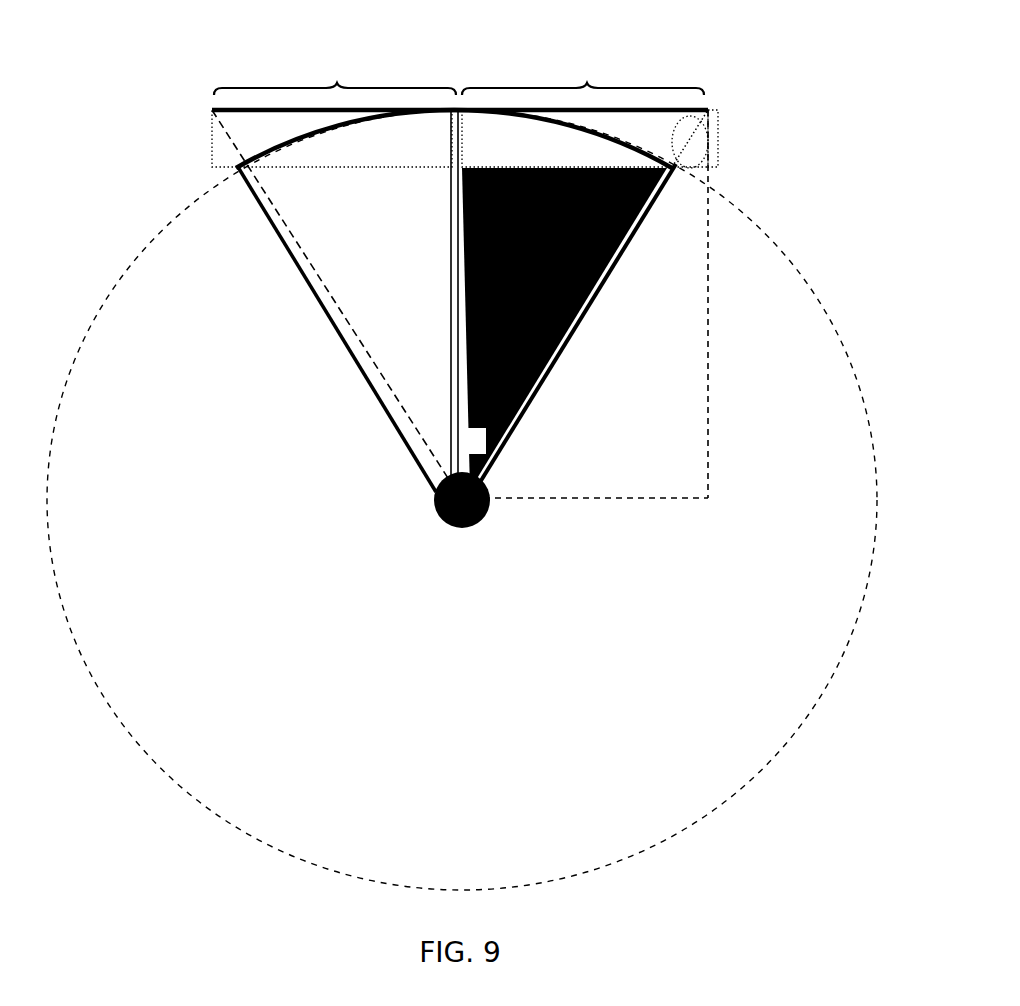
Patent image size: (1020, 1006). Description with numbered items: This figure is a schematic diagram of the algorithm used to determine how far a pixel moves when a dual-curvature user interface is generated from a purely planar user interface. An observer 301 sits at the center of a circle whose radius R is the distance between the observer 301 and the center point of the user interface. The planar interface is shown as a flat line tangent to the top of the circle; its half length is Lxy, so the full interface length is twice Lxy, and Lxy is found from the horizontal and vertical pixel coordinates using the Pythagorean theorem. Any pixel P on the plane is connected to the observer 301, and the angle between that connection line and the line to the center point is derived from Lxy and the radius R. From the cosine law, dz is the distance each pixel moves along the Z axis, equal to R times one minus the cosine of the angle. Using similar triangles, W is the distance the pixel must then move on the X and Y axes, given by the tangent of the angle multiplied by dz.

The observer 301 is at (490, 523).
The radius R is at (457, 301).
The pixel P is at (703, 108).
The distance of movement on X and Y axes W is at (690, 161).
The distance of movement on Z axis dz is at (462, 138).
The half length of the third user interface Lxy is at (459, 75).